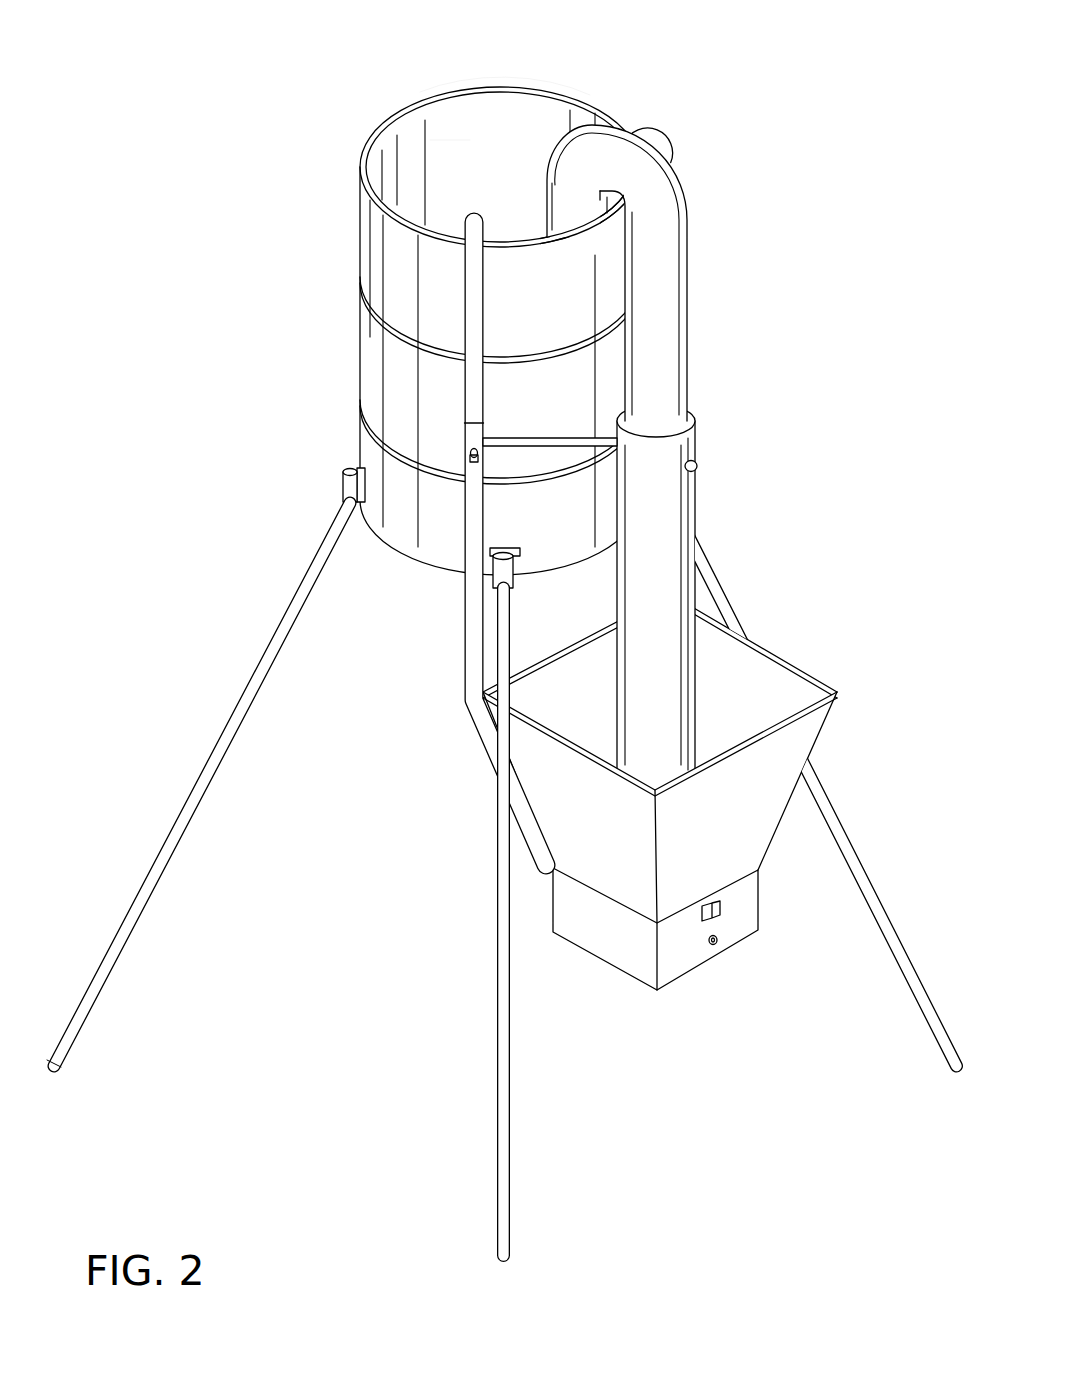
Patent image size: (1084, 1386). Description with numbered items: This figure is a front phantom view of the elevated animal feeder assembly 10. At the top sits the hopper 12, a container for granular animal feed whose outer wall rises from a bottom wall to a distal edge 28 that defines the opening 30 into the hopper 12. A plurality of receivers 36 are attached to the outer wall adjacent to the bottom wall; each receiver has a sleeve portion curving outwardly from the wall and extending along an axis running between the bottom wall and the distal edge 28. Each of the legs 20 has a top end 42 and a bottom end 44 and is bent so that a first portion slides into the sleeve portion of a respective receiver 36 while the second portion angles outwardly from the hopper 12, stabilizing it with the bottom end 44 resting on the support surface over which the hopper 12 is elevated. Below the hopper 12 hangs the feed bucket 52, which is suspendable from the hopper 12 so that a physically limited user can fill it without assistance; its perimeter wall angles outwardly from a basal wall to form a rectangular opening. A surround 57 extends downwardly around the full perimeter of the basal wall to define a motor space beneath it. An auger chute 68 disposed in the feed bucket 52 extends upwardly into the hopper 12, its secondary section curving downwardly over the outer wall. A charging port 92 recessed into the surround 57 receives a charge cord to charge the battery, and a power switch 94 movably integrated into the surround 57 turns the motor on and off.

The elevated animal feeder assembly 10 is at (178, 212).
The hopper 12 is at (357, 247).
The legs 20 is at (866, 880).
The distal edge 28 is at (507, 85).
The opening 30 is at (457, 143).
The receivers 36 is at (343, 478).
The top end 42 is at (355, 468).
The bottom end 44 is at (47, 1078).
The feed bucket 52 is at (845, 688).
The surround 57 is at (675, 960).
The auger chute 68 is at (713, 362).
The charging port 92 is at (718, 944).
The power switch 94 is at (722, 908).